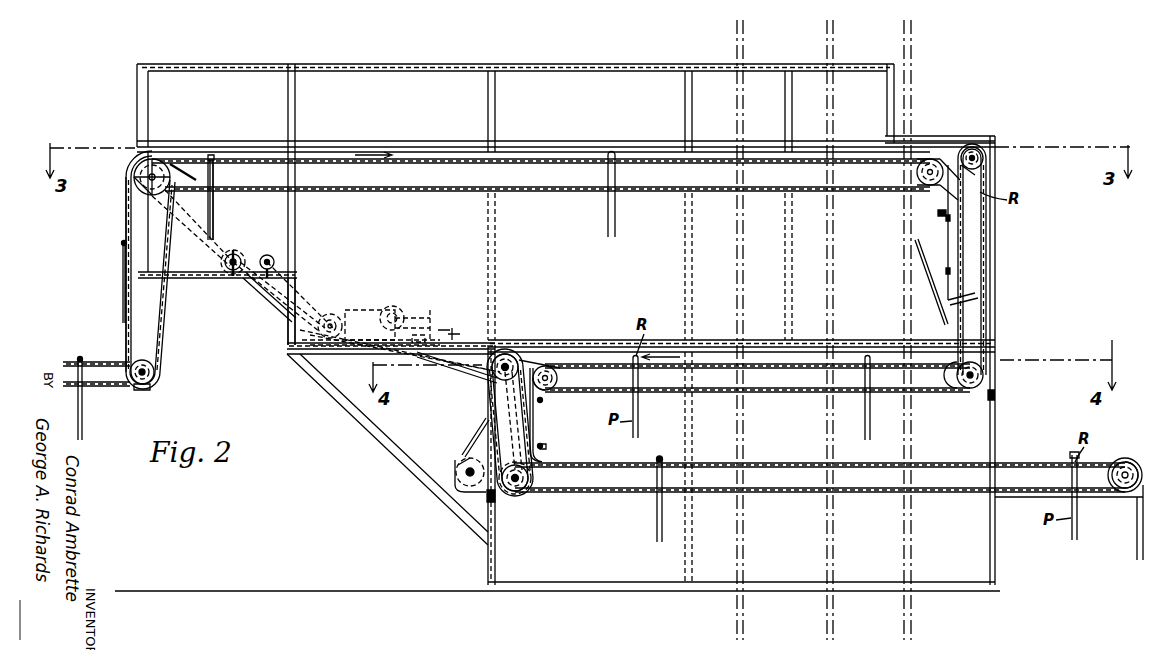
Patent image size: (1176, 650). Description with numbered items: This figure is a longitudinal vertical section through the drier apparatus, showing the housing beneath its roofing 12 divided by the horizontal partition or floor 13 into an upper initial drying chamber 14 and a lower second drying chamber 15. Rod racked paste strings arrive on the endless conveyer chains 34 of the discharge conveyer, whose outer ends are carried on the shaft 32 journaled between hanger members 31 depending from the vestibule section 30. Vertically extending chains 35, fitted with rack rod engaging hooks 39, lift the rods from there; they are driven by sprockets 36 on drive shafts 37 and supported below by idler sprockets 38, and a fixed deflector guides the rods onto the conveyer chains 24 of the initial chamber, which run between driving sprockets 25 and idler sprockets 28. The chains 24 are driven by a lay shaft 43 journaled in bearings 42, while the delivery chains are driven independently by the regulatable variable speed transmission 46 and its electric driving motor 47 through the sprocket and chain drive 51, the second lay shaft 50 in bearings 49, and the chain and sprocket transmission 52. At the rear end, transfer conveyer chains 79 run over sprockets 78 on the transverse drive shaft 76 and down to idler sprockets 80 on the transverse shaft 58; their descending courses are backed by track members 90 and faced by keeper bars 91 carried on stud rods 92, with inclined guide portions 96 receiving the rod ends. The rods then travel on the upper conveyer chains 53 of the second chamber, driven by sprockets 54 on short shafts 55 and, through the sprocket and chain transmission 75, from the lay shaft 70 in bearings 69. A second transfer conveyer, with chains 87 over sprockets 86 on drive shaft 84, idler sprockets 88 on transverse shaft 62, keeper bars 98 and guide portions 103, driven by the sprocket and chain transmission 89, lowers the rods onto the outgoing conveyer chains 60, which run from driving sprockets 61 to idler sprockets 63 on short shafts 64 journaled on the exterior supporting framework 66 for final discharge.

The roofing 12 is at (566, 66).
The horizontal partition or floor 13 is at (610, 332).
The initial drying chamber 14 is at (577, 194).
The second drying chamber 15 is at (557, 468).
The conveyer chains 24 is at (344, 184).
The sprockets 25 is at (178, 165).
The sprockets 28 is at (930, 186).
The vestibule section 30 is at (208, 212).
The hanger members 31 is at (155, 345).
The shaft 32 is at (158, 380).
The endless conveyer chains 34 is at (100, 362).
The vertically extending chains 35 is at (126, 225).
The sprockets 36 is at (150, 196).
The drive shafts 37 is at (135, 178).
The idler sprockets 38 is at (150, 368).
The hooks 39 is at (123, 248).
The bearings 42 is at (270, 255).
The lay shaft 43 is at (263, 255).
The regulatable variable speed transmission 46 is at (332, 314).
The electric driving motor 47 is at (400, 312).
The bearings 49 is at (222, 258).
The second lay shaft 50 is at (230, 279).
The sprocket and chain drive 51 is at (270, 292).
The chain and sprocket transmission 52 is at (237, 232).
The conveyer chains 53 is at (670, 370).
The sprockets 54 is at (558, 378).
The short shafts 55 is at (552, 390).
The transverse shaft 58 is at (968, 390).
The conveyer chains 60 is at (645, 470).
The sprockets 61 is at (532, 476).
The transverse shaft 62 is at (518, 492).
The sprockets 63 is at (1110, 477).
The short shafts 64 is at (1130, 464).
The supporting framework 66 is at (1132, 494).
The bearings 69 is at (456, 468).
The lay shaft 70 is at (486, 495).
The sprocket and chain transmission 75 is at (454, 458).
The transverse drive shaft 76 is at (986, 160).
The sprockets 78 is at (975, 172).
The transfer conveyer chains 79 is at (985, 294).
The idler sprockets 80 is at (985, 371).
The transverse drive shaft 84 is at (510, 352).
The sprockets 86 is at (535, 355).
The transfer conveyer chains 87 is at (490, 405).
The idler sprockets 88 is at (546, 448).
The sprocket and chain transmission 89 is at (448, 368).
The track members 90 is at (965, 246).
The keeper bars 91 is at (950, 238).
The stud rods 92 is at (480, 424).
The guide portions 96 is at (958, 131).
The keeper bars 98 is at (535, 424).
The guide portions 103 is at (533, 365).